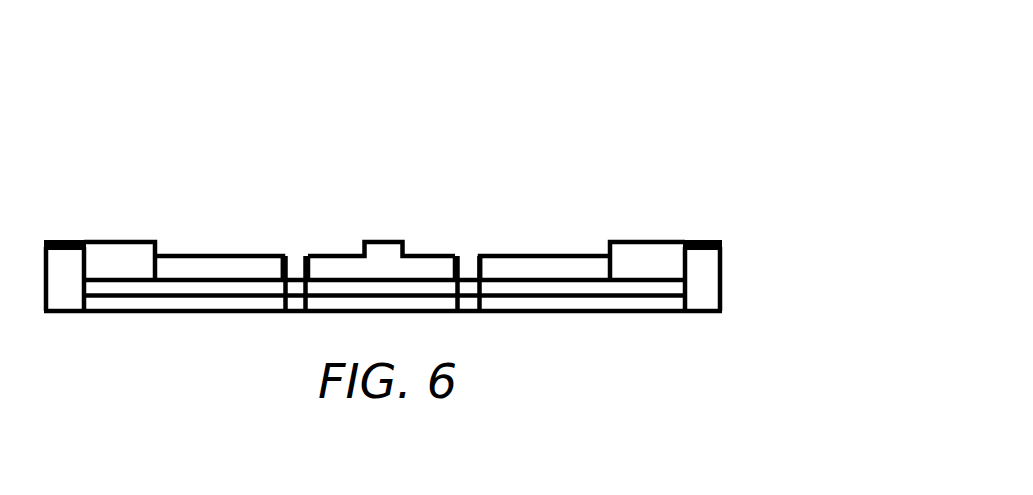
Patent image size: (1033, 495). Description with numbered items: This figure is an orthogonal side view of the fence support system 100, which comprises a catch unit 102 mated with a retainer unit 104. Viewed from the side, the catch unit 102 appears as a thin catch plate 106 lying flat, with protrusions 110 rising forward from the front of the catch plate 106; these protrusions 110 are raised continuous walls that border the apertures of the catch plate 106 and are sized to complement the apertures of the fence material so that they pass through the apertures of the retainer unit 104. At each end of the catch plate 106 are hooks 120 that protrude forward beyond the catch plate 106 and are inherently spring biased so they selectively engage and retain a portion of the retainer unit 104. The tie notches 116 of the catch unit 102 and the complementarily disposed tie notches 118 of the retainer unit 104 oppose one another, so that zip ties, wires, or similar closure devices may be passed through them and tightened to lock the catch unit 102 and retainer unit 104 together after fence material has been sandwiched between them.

The fence support system 100 is at (588, 132).
The catch unit 102 is at (520, 300).
The retainer unit 104 is at (440, 283).
The catch plate 106 is at (338, 312).
The protrusions 110 is at (213, 257).
The tie notches 116 is at (300, 297).
The tie notches 118 is at (293, 283).
The hooks 120 is at (63, 288).